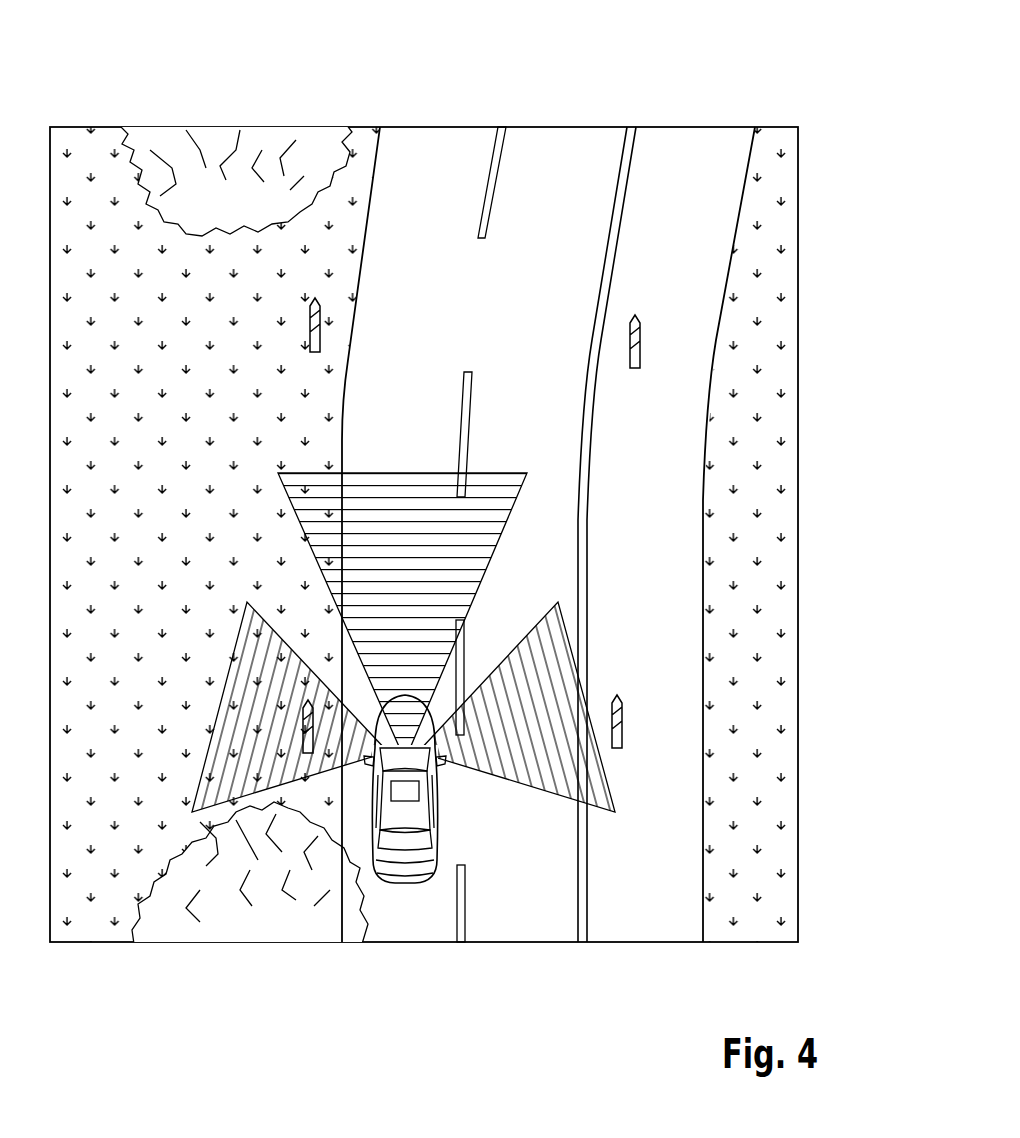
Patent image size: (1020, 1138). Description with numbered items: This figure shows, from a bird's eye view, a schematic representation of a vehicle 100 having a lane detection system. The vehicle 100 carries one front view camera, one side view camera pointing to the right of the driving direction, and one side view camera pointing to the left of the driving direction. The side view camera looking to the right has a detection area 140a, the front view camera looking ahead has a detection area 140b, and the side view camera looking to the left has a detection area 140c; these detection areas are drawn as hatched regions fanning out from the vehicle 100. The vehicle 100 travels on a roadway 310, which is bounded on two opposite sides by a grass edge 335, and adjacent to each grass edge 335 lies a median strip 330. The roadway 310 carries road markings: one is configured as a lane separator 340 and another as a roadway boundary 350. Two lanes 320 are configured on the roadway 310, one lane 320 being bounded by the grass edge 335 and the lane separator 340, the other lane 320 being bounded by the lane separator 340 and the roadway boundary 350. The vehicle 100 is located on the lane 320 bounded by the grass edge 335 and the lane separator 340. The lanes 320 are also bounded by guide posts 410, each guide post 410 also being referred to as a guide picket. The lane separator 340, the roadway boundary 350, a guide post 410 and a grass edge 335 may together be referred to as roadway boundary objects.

The roadway 310 is at (612, 80).
The lane 320 is at (434, 138).
The median strip 330 is at (82, 250).
The grass edge 335 is at (379, 127).
The lane separator 340 is at (496, 127).
The roadway boundary 350 is at (578, 905).
The guide post 410 is at (320, 332).
The vehicle 100 is at (405, 855).
The detection area 140a is at (488, 751).
The detection area 140b is at (367, 540).
The detection area 140c is at (248, 781).